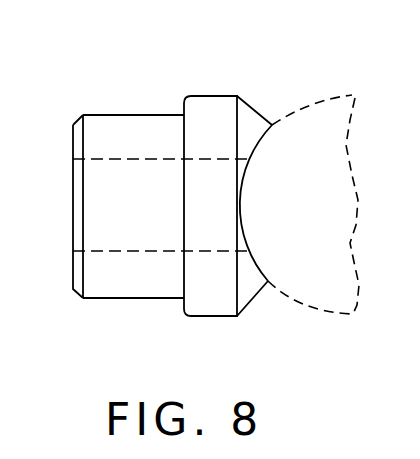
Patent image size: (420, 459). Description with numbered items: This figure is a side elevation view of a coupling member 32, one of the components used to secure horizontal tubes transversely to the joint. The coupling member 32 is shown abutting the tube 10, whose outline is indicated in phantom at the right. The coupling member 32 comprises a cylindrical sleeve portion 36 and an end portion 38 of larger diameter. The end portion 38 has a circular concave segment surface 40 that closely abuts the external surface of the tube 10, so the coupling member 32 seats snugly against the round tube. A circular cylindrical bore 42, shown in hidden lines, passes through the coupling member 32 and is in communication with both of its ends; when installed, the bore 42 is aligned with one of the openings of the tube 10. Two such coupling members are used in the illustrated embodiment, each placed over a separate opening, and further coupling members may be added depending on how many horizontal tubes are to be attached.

The tube 10 is at (352, 93).
The coupling member 32 is at (120, 100).
The cylindrical sleeve portion 36 is at (117, 299).
The end portion 38 is at (213, 317).
The circular concave segment surface 40 is at (238, 212).
The circular cylindrical bore 42 is at (118, 160).